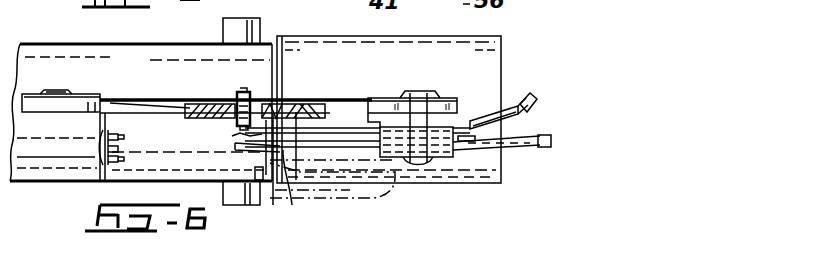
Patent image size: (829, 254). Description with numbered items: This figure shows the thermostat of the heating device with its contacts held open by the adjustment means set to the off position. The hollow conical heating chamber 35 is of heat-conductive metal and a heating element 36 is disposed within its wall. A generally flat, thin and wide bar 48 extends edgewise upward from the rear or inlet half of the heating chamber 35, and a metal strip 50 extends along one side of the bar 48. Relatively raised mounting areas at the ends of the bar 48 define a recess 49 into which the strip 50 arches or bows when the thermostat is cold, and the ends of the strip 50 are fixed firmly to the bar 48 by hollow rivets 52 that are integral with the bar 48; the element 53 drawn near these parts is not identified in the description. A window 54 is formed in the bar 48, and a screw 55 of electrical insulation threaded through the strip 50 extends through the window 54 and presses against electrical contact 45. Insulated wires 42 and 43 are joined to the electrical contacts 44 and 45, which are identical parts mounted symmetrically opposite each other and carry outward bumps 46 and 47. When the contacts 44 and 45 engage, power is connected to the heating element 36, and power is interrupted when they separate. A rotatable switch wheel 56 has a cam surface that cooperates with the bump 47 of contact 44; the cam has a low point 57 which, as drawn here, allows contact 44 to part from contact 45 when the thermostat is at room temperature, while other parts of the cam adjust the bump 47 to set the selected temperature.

The heating chamber 35 is at (32, 64).
The heating element 36 is at (100, 142).
The insulated wire 42 is at (546, 137).
The insulated wire 43 is at (534, 100).
The electrical contact 44 is at (246, 143).
The electrical contact 45 is at (236, 135).
The outward bump 46 is at (282, 107).
The outward bump 47 is at (272, 176).
The flat bar 48 is at (85, 103).
The recess 49 is at (113, 103).
The strip 50 is at (148, 98).
The hollow rivets 52 is at (398, 95).
The bolts 53 is at (415, 93).
The window 54 is at (232, 101).
The screw 55 is at (240, 92).
The switch wheel 56 is at (353, 198).
The low point 57 is at (293, 205).